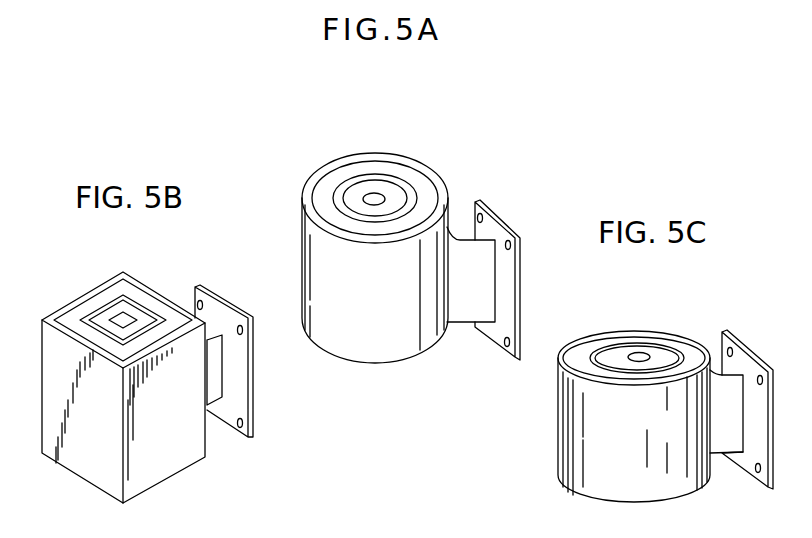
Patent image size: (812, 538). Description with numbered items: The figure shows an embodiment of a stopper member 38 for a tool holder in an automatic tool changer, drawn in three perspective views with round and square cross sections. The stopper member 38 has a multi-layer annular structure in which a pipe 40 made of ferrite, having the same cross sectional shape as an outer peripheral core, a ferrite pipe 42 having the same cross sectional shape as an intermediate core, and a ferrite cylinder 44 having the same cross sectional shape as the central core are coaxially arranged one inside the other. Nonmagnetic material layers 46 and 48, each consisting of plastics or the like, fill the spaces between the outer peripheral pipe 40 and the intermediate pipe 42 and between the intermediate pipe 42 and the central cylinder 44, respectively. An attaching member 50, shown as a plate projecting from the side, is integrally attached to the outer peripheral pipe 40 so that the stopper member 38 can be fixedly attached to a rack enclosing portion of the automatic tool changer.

In FIG. 5A, the stopper member 38 is at (301, 177).
In FIG. 5B, the stopper member 38 is at (96, 270).
In FIG. 5C, the stopper member 38 is at (552, 384).
In FIG. 5A, the pipe 40 is at (430, 167).
In FIG. 5B, the pipe 40 is at (163, 293).
In FIG. 5C, the pipe 40 is at (690, 333).
In FIG. 5A, the ferrite pipe 42 is at (387, 177).
In FIG. 5B, the ferrite pipe 42 is at (130, 298).
In FIG. 5C, the ferrite pipe 42 is at (650, 340).
In FIG. 5A, the ferrite cylinder 44 is at (372, 199).
In FIG. 5B, the ferrite cylinder 44 is at (120, 317).
In FIG. 5C, the ferrite cylinder 44 is at (636, 355).
In FIG. 5A, the nonmagnetic material layer 46 is at (328, 215).
In FIG. 5B, the nonmagnetic material layer 46 is at (118, 290).
In FIG. 5C, the nonmagnetic material layer 46 is at (585, 350).
In FIG. 5A, the nonmagnetic material layer 48 is at (397, 203).
In FIG. 5B, the nonmagnetic material layer 48 is at (157, 313).
In FIG. 5C, the nonmagnetic material layer 48 is at (667, 350).
In FIG. 5A, the attaching member 50 is at (503, 303).
In FIG. 5B, the attaching member 50 is at (238, 387).
In FIG. 5C, the attaching member 50 is at (747, 460).